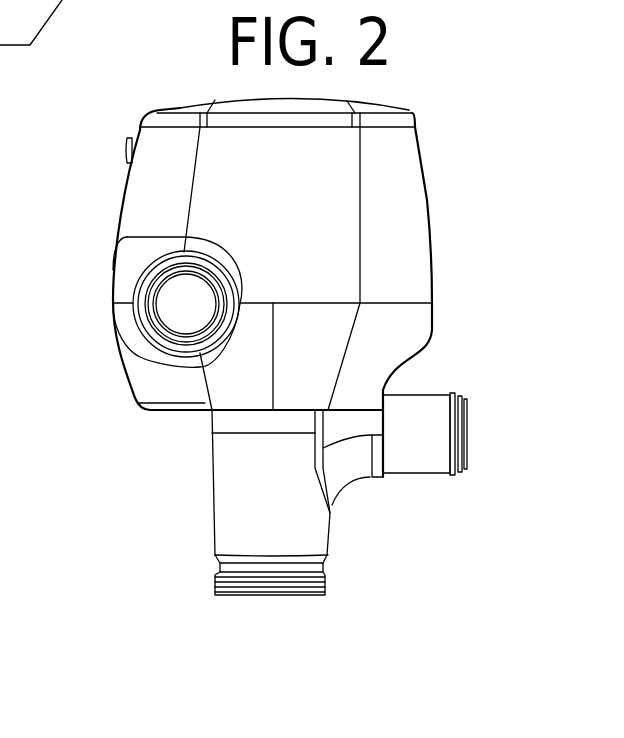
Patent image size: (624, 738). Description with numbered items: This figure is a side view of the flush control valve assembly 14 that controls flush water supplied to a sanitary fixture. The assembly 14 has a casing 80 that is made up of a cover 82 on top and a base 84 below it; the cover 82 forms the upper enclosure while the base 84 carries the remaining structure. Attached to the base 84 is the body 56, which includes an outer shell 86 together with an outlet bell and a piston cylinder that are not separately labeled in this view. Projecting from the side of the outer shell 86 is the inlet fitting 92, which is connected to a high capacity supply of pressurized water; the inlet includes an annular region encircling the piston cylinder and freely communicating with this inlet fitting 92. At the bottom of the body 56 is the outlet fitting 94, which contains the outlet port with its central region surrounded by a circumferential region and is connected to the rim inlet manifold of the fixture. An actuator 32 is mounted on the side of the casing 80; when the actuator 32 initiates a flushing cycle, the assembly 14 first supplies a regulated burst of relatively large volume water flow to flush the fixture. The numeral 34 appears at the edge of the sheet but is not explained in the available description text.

The flush control valve assembly 14 is at (429, 109).
The casing 80 is at (180, 108).
The actuator 32 is at (125, 147).
The cover 82 is at (405, 192).
The base 84 is at (417, 327).
The inlet fitting 92 is at (465, 417).
The outer shell 86 is at (212, 490).
The body 56 is at (307, 525).
The outlet fitting 94 is at (297, 595).
The adjacent figure element 34 is at (31, 22).